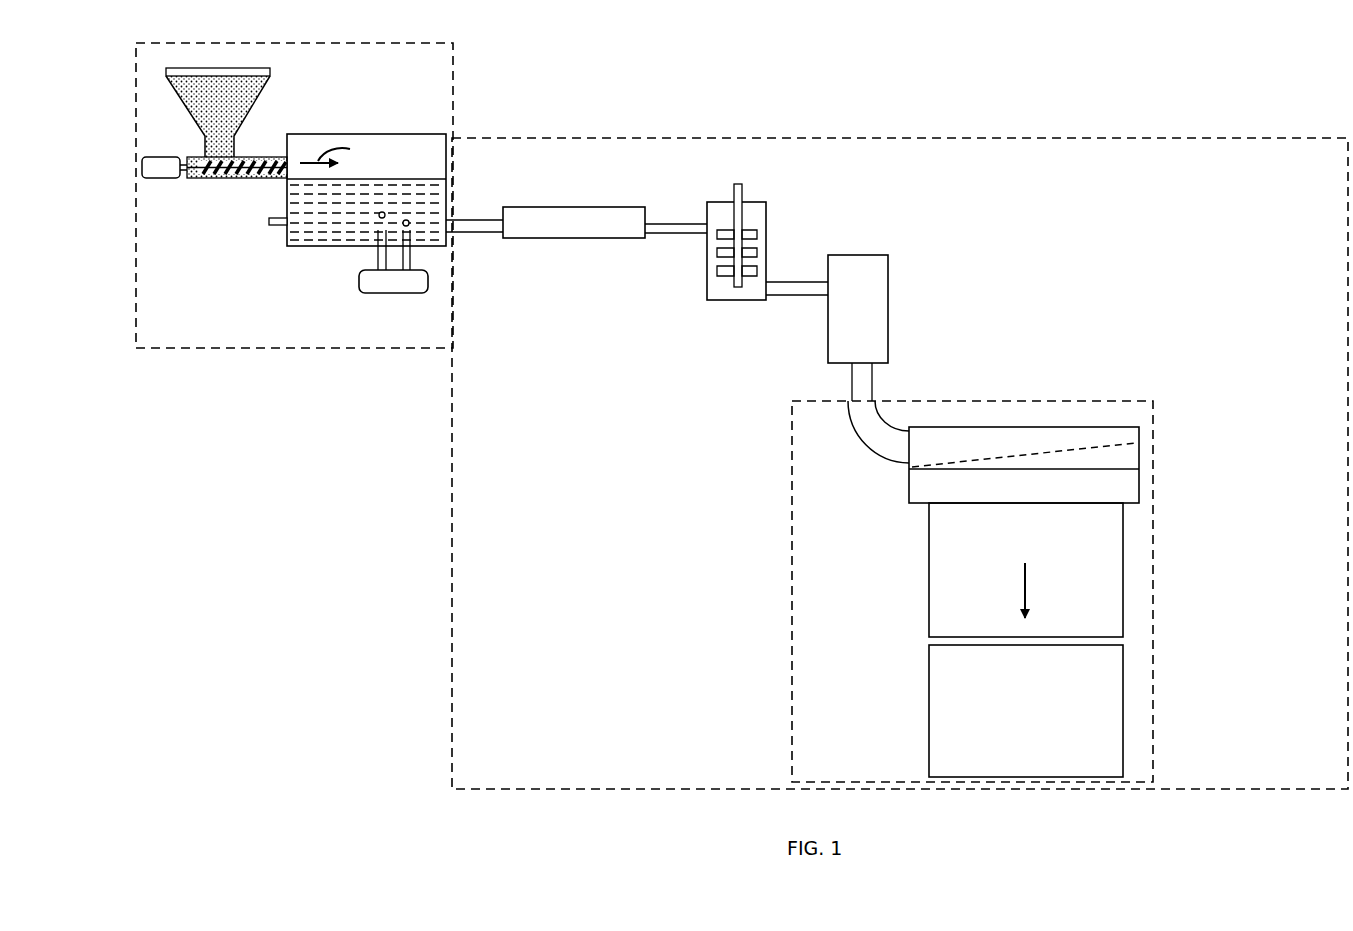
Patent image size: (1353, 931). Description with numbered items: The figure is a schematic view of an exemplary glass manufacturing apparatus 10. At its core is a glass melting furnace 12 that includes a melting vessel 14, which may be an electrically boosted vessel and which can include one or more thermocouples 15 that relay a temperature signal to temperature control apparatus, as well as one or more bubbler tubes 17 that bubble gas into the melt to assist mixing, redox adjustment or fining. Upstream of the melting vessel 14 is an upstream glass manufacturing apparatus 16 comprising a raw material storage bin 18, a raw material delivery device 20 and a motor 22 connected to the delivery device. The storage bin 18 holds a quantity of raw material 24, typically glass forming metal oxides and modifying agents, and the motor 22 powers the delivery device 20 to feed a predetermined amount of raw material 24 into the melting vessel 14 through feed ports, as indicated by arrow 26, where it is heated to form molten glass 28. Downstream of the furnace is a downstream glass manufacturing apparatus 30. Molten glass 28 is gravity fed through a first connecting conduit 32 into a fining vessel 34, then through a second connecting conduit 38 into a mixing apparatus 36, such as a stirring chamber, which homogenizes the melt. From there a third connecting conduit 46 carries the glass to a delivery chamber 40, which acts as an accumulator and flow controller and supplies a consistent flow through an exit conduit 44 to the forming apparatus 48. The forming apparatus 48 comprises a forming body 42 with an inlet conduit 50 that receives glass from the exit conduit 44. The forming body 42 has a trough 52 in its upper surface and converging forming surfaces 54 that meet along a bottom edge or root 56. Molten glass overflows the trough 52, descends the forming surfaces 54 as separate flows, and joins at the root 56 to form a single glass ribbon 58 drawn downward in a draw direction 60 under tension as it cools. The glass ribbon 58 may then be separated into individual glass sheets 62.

The glass manufacturing apparatus 10 is at (373, 413).
The glass melting furnace 12 is at (298, 348).
The melting vessel 14 is at (364, 201).
The thermocouple 15 is at (278, 228).
The upstream glass manufacturing apparatus 16 is at (188, 206).
The bubbler tube 17 is at (368, 257).
The raw material storage bin 18 is at (245, 111).
The raw material delivery device 20 is at (257, 179).
The motor 22 is at (150, 155).
The raw material 24 is at (227, 108).
The arrow 26 is at (336, 155).
The molten glass 28 is at (315, 236).
The downstream glass manufacturing apparatus 30 is at (712, 138).
The first connecting conduit 32 is at (483, 235).
The fining vessel 34 is at (560, 238).
The mixing apparatus 36 is at (707, 282).
The second connecting conduit 38 is at (675, 235).
The delivery chamber 40 is at (828, 342).
The forming body 42 is at (1141, 462).
The exit conduit 44 is at (875, 382).
The third connecting conduit 46 is at (795, 297).
The forming apparatus 48 is at (1037, 402).
The inlet conduit 50 is at (870, 448).
The trough 52 is at (1073, 448).
The converging forming surfaces 54 is at (912, 477).
The root 56 is at (1017, 460).
The glass ribbon 58 is at (928, 560).
The draw direction 60 is at (1020, 600).
The glass sheets 62 is at (928, 735).